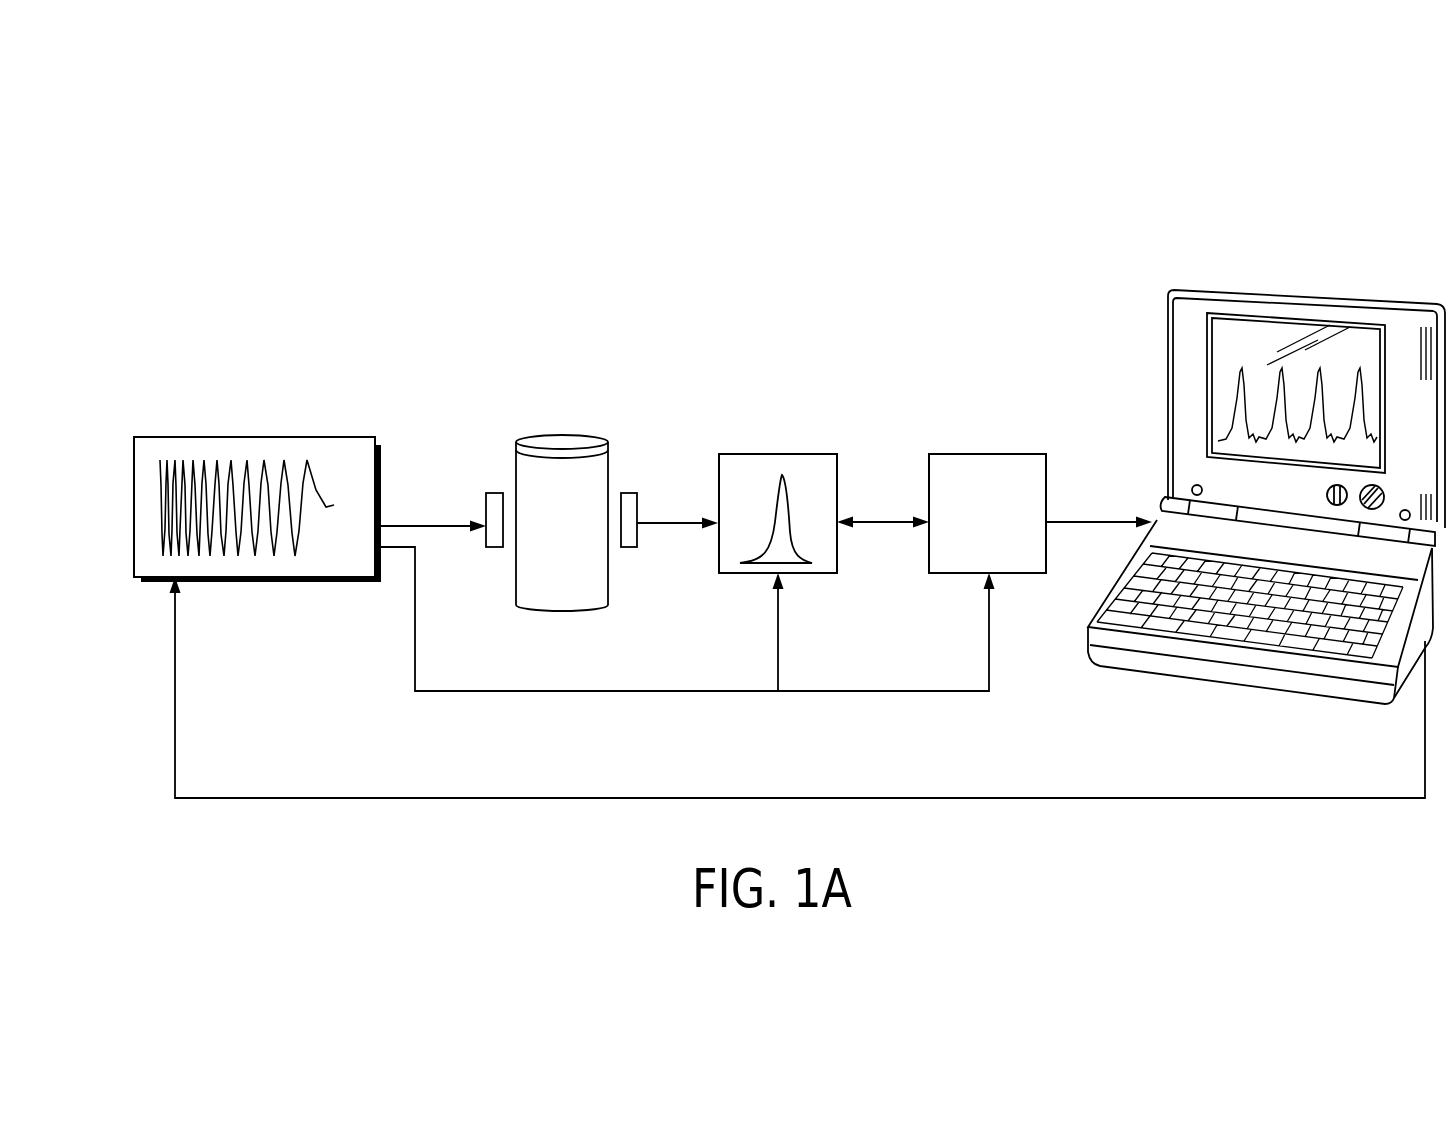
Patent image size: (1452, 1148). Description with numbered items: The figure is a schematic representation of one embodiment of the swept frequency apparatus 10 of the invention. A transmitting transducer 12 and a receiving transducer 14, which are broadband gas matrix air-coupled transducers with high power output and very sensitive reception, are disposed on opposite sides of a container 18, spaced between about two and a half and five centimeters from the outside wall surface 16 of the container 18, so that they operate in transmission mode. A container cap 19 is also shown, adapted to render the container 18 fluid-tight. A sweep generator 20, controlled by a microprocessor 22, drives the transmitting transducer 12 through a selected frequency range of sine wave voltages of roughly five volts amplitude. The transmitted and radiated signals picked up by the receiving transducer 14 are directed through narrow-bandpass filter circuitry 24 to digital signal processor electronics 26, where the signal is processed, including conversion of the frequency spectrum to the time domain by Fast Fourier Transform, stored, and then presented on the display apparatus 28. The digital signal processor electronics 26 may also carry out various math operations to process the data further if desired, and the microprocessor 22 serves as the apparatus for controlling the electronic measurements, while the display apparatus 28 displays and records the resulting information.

The swept frequency apparatus 10 is at (388, 338).
The transmitting transducer 12 is at (495, 550).
The receiving transducer 14 is at (630, 548).
The outside wall surface 16 is at (612, 484).
The container 18 is at (612, 460).
The container cap 19 is at (558, 440).
The sweep generator 20 is at (135, 578).
The microprocessor 22 is at (1398, 692).
The narrow-bandpass filter circuitry 24 is at (737, 575).
The digital signal processor electronics 26 is at (958, 452).
The display apparatus 28 is at (1220, 376).